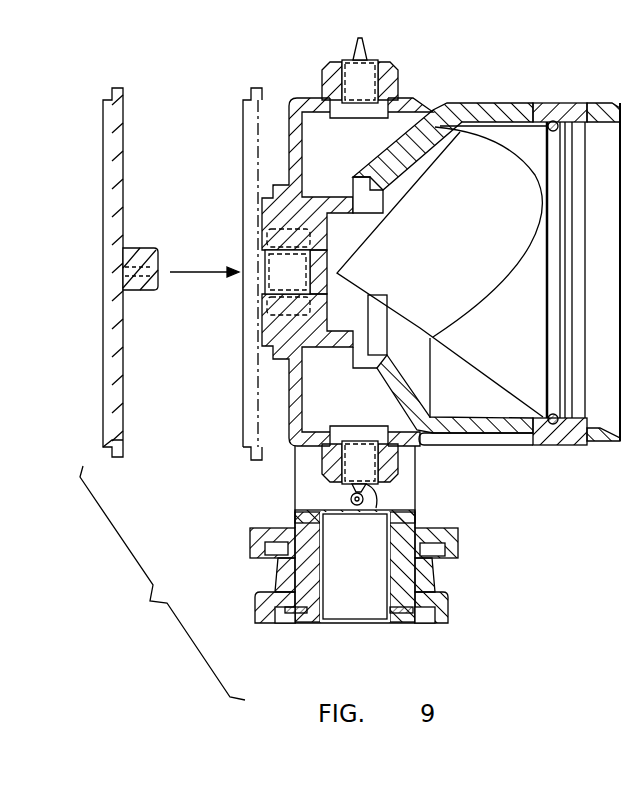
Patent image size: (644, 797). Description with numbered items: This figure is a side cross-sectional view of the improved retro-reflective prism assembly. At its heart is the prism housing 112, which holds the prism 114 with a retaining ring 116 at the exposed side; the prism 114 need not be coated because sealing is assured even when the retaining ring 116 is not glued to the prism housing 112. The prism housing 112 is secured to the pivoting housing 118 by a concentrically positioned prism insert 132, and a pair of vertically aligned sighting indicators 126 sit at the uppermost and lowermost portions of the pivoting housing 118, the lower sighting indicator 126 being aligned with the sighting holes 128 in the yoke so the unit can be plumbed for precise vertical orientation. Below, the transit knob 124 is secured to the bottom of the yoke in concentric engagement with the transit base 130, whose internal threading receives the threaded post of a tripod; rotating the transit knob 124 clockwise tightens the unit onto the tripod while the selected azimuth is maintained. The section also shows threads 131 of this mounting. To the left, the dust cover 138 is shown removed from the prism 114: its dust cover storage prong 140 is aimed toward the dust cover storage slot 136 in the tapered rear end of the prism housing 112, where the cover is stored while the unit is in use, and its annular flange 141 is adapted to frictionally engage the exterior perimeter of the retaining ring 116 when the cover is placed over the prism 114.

The prism housing 112 is at (551, 118).
The prism 114 is at (470, 173).
The retaining ring 116 is at (597, 106).
The pivoting housing 118 is at (294, 100).
The transit knob 124 is at (250, 550).
The sighting indicator 126 is at (351, 50).
The sighting holes 128 is at (349, 500).
The transit base 130 is at (290, 600).
The threads 131 is at (290, 614).
The prism insert 132 is at (273, 330).
The dust cover storage slot 136 is at (273, 278).
The dust cover 138 is at (122, 397).
The dust cover storage prong 140 is at (137, 248).
The annular flange 141 is at (102, 443).